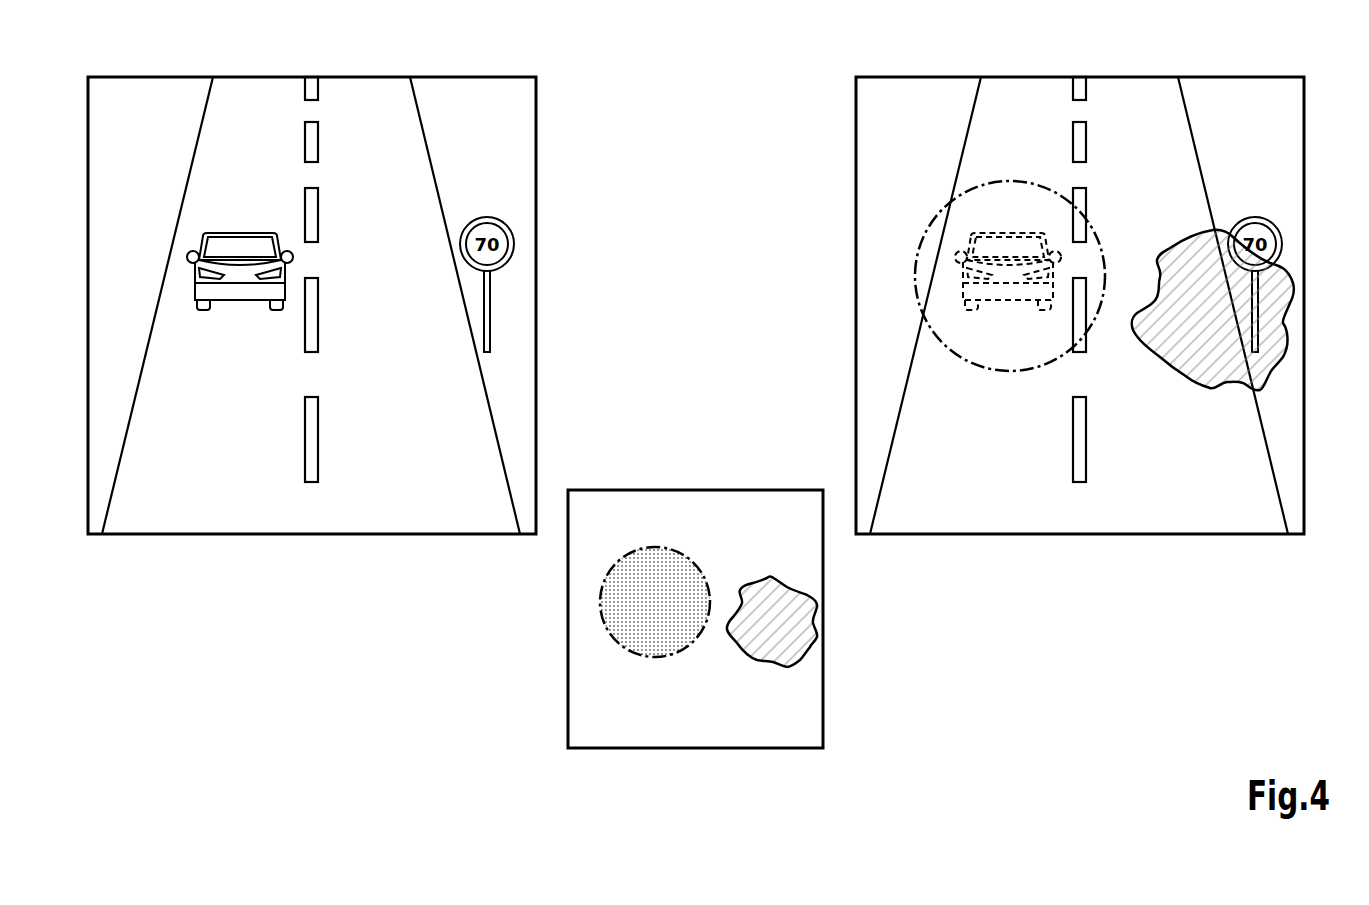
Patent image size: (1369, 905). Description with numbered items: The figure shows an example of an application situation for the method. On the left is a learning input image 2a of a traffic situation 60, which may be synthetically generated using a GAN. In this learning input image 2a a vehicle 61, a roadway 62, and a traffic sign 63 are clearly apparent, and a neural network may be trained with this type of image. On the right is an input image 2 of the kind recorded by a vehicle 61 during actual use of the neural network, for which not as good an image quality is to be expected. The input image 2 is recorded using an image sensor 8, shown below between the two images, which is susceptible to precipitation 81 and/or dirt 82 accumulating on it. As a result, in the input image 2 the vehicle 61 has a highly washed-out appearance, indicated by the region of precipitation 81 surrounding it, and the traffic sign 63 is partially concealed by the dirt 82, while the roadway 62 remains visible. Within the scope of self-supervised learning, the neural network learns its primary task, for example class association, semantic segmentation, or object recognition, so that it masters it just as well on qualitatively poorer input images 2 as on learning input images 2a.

The learning input image 2a is at (536, 107).
The input image 2 is at (856, 105).
The image sensor 8 is at (568, 683).
The traffic situation 60 is at (124, 200).
The vehicle 61 is at (190, 243).
The roadway 62 is at (142, 366).
The traffic sign 63 is at (514, 244).
The precipitation 81 is at (914, 276).
The dirt 82 is at (1288, 325).